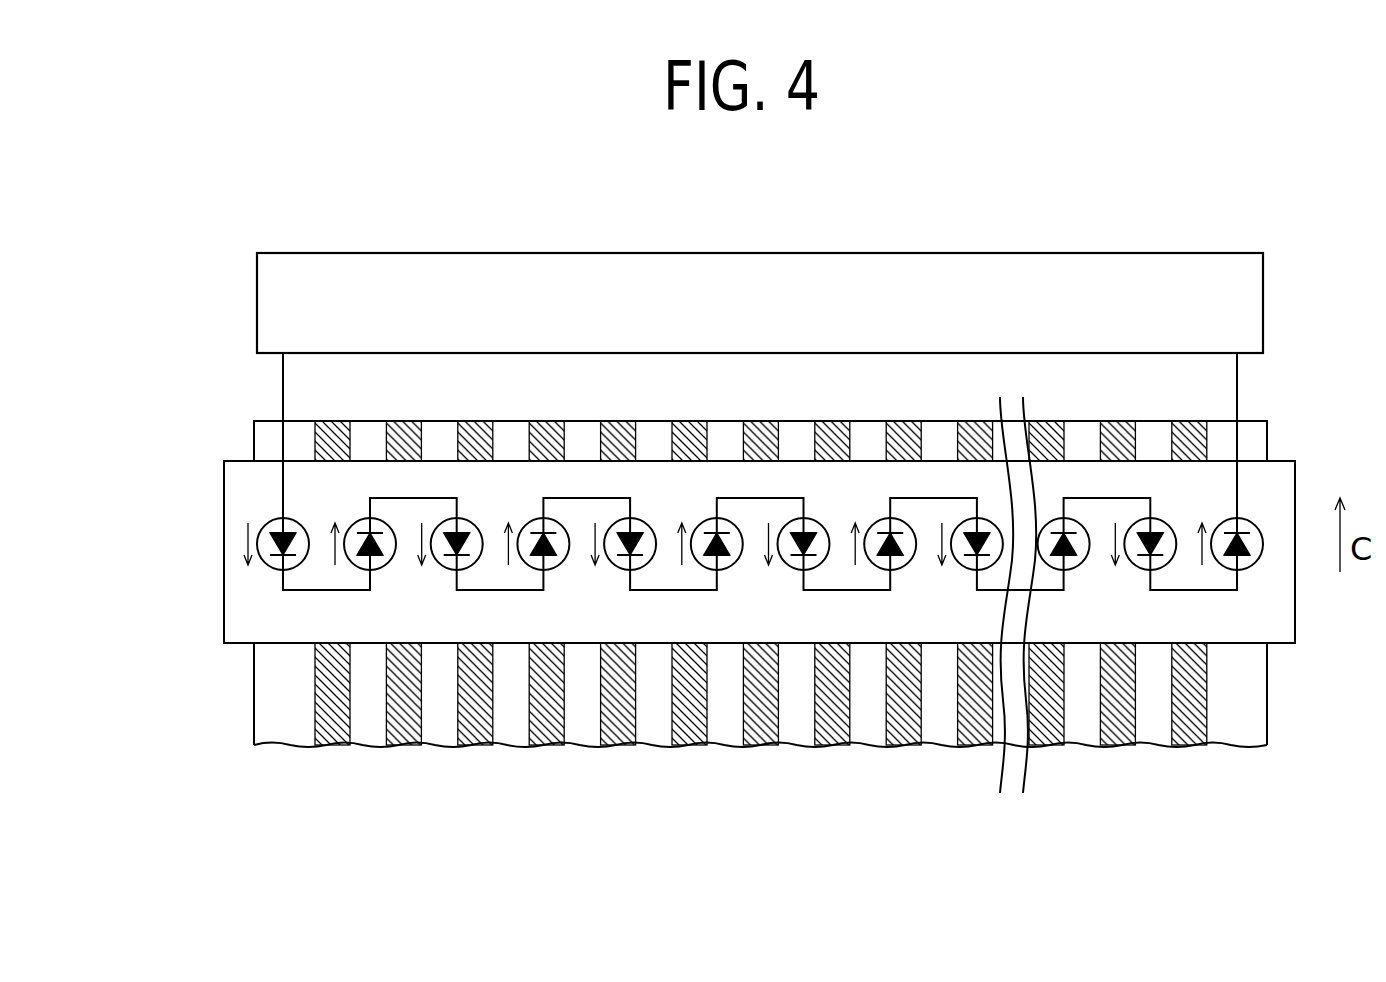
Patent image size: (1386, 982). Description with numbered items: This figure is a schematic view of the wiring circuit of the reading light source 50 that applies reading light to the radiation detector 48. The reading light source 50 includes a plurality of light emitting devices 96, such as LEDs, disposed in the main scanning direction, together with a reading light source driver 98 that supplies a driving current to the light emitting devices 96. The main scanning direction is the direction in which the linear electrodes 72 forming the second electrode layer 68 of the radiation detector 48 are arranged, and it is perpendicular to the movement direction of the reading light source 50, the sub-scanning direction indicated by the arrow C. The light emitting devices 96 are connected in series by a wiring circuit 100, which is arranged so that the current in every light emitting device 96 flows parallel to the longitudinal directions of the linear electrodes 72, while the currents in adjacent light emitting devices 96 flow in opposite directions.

The radiation detector 48 is at (751, 582).
The reading light source 50 is at (751, 573).
The second electrode layer 68 is at (796, 727).
The linear electrodes 72 is at (1188, 715).
The light emitting devices 96 is at (1258, 561).
The reading light source driver 98 is at (1186, 253).
The wiring circuit 100 is at (1078, 498).